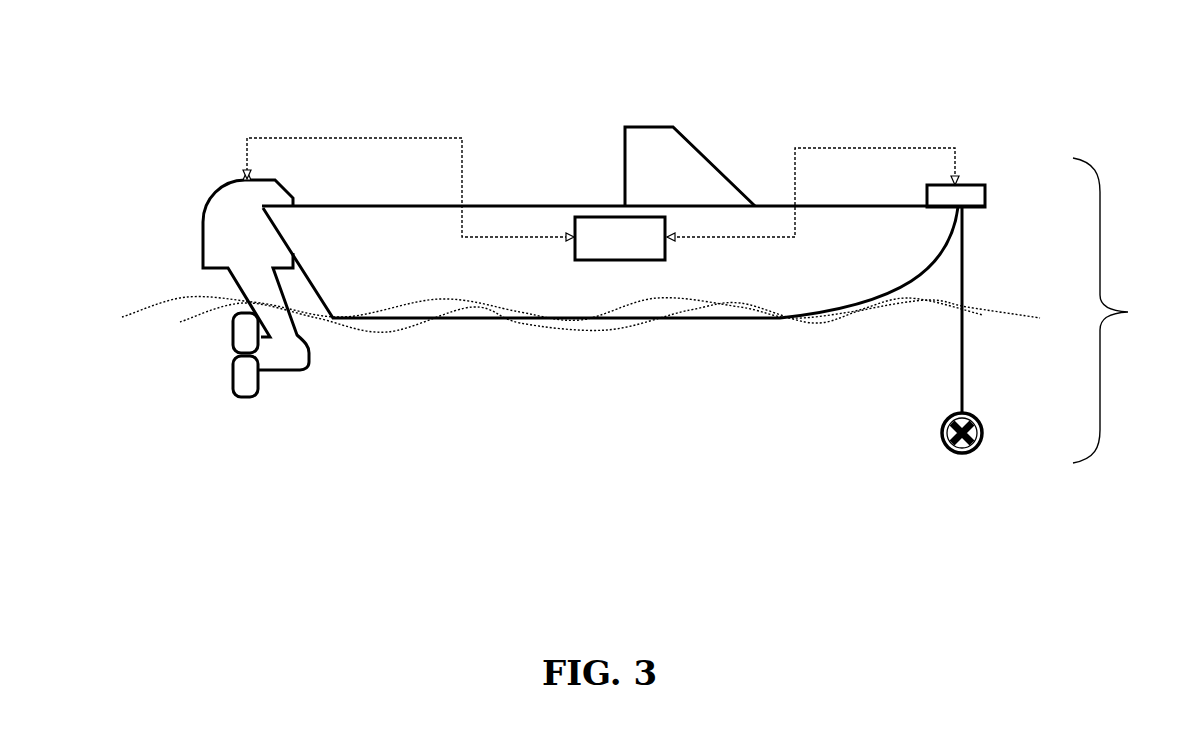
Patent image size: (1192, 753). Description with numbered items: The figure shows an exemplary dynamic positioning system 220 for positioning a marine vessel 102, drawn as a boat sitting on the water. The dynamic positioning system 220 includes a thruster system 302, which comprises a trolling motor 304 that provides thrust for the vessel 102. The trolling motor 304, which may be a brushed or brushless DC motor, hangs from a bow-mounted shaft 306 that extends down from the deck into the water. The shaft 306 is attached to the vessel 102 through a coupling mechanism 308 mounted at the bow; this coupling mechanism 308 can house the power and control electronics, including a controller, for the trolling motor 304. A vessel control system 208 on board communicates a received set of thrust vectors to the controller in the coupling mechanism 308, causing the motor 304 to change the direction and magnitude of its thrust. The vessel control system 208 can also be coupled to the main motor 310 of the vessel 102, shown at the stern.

The marine vessel 102 is at (812, 287).
The vessel control system 208 is at (638, 248).
The dynamic positioning system 220 is at (994, 99).
The thruster system 302 is at (1126, 310).
The trolling motor 304 is at (983, 422).
The bow-mounted shaft 306 is at (966, 259).
The coupling mechanism 308 is at (982, 186).
The main motor 310 is at (259, 244).